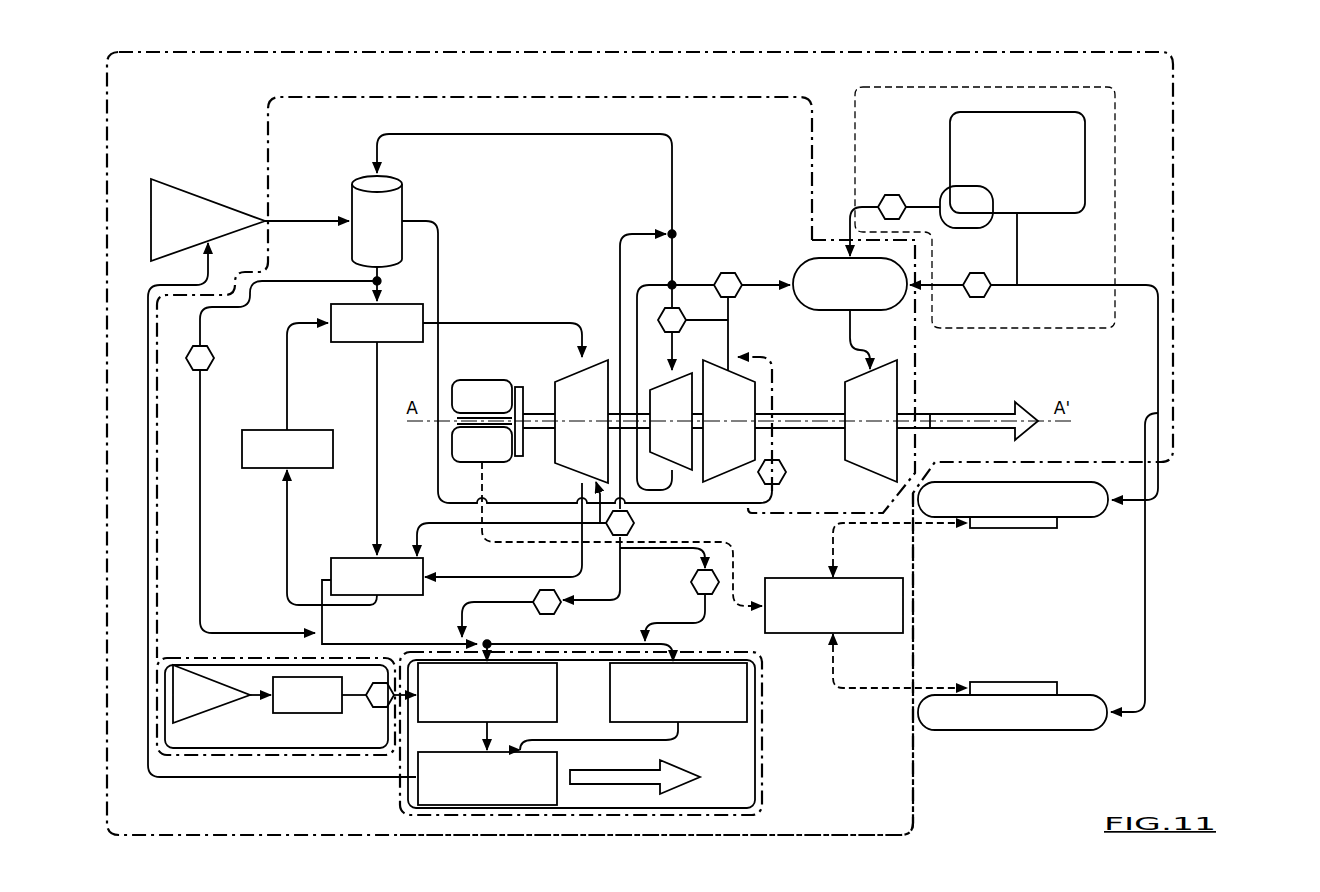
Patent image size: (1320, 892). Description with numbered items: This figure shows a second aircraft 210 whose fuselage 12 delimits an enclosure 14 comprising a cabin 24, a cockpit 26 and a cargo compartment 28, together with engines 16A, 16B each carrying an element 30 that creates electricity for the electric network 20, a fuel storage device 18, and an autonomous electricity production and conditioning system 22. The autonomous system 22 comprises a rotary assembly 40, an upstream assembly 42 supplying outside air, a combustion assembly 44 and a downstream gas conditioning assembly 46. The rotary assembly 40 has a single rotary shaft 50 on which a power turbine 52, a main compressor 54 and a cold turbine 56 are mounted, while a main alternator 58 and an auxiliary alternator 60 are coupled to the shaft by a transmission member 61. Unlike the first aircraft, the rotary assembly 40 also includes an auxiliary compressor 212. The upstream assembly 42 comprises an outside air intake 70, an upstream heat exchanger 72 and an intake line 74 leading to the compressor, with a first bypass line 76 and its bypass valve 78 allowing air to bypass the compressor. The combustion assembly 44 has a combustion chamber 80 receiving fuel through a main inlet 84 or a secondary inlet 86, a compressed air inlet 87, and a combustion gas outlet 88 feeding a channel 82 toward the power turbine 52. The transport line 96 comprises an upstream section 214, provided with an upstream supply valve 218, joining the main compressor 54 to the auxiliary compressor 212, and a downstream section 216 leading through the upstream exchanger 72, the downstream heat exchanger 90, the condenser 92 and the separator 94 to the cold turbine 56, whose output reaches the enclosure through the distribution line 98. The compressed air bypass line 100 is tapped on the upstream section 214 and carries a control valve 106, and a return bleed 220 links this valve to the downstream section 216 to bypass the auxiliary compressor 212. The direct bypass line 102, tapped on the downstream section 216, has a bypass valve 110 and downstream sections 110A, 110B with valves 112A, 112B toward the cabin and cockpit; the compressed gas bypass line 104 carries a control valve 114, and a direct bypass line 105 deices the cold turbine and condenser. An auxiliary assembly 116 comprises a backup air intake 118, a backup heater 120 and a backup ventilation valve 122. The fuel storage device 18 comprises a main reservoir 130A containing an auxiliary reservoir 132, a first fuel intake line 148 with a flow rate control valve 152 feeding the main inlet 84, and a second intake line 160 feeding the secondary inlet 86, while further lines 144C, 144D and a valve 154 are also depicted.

The fuselage 12 is at (918, 793).
The enclosure 14 is at (768, 752).
The engine 16A is at (1078, 518).
The engine 16B is at (1035, 731).
The fuel storage device 18 is at (1124, 143).
The electric network 20 is at (866, 605).
The autonomous electricity production and conditioning system 22 is at (792, 88).
The cabin 24 is at (487, 695).
The cockpit 26 is at (617, 697).
The cargo compartment 28 is at (424, 524).
The element 30 is at (1040, 529).
The rotary assembly 40 is at (917, 421).
The upstream assembly 42 is at (206, 165).
The combustion assembly 44 is at (776, 238).
The downstream gas conditioning assembly 46 is at (450, 200).
The rotary shaft 50 is at (812, 412).
The power turbine 52 is at (910, 386).
The compressor 54 is at (729, 421).
The cold turbine 56 is at (581, 421).
The main alternator 58 is at (482, 444).
The auxiliary alternator 60 is at (482, 396).
The transmission member 61 is at (519, 386).
The outside air intake 70 is at (178, 160).
The upstream heat exchanger 72 is at (342, 188).
The outside upstream air intake line 74 is at (440, 290).
The first outside air bypass line 76 is at (775, 447).
The bypass valve 78 is at (786, 478).
The combustion chamber 80 is at (808, 258).
The channel 82 is at (848, 322).
The main inlet 84 is at (908, 270).
The secondary inlet 86 is at (848, 255).
The compressed air intake inlet 87 is at (795, 300).
The combustion gas outlet 88 is at (858, 318).
The downstream heat exchanger 90 is at (456, 411).
The condenser 92 is at (399, 601).
The separator 94 is at (309, 517).
The transport line 96 is at (693, 125).
The expanded cold gas distribution line 98 is at (447, 582).
The compressed air bypass line 100 is at (760, 282).
The direct compressed air bypass line 102 is at (642, 232).
The compressed gas bypass line 104 is at (272, 290).
The direct bypass line 105 is at (455, 521).
The control valve 106 is at (728, 270).
The bypass valve 110 is at (636, 523).
The downstream section 110A is at (738, 620).
The downstream section 110B is at (630, 596).
The valve 112A is at (561, 608).
The valve 112B is at (718, 578).
The control valve 114 is at (215, 366).
The auxiliary assembly 116 is at (268, 760).
The backup air intake 118 is at (222, 694).
The backup heater 120 is at (319, 695).
The backup ventilation valve 122 is at (375, 708).
The main reservoir 130A is at (1017, 162).
The auxiliary reservoir 132 is at (966, 207).
The line 144C is at (1152, 438).
The line 144D is at (1150, 600).
The first fuel intake line 148 is at (1018, 280).
The flow rate control valve 152 is at (983, 298).
The valve 154 is at (890, 194).
The second intake line 160 is at (920, 206).
The second aircraft 210 is at (1178, 735).
The auxiliary compressor 212 is at (671, 421).
The upstream section 214 is at (722, 318).
The downstream section 216 is at (672, 150).
The upstream supply valve 218 is at (656, 318).
The return bleed 220 is at (655, 290).